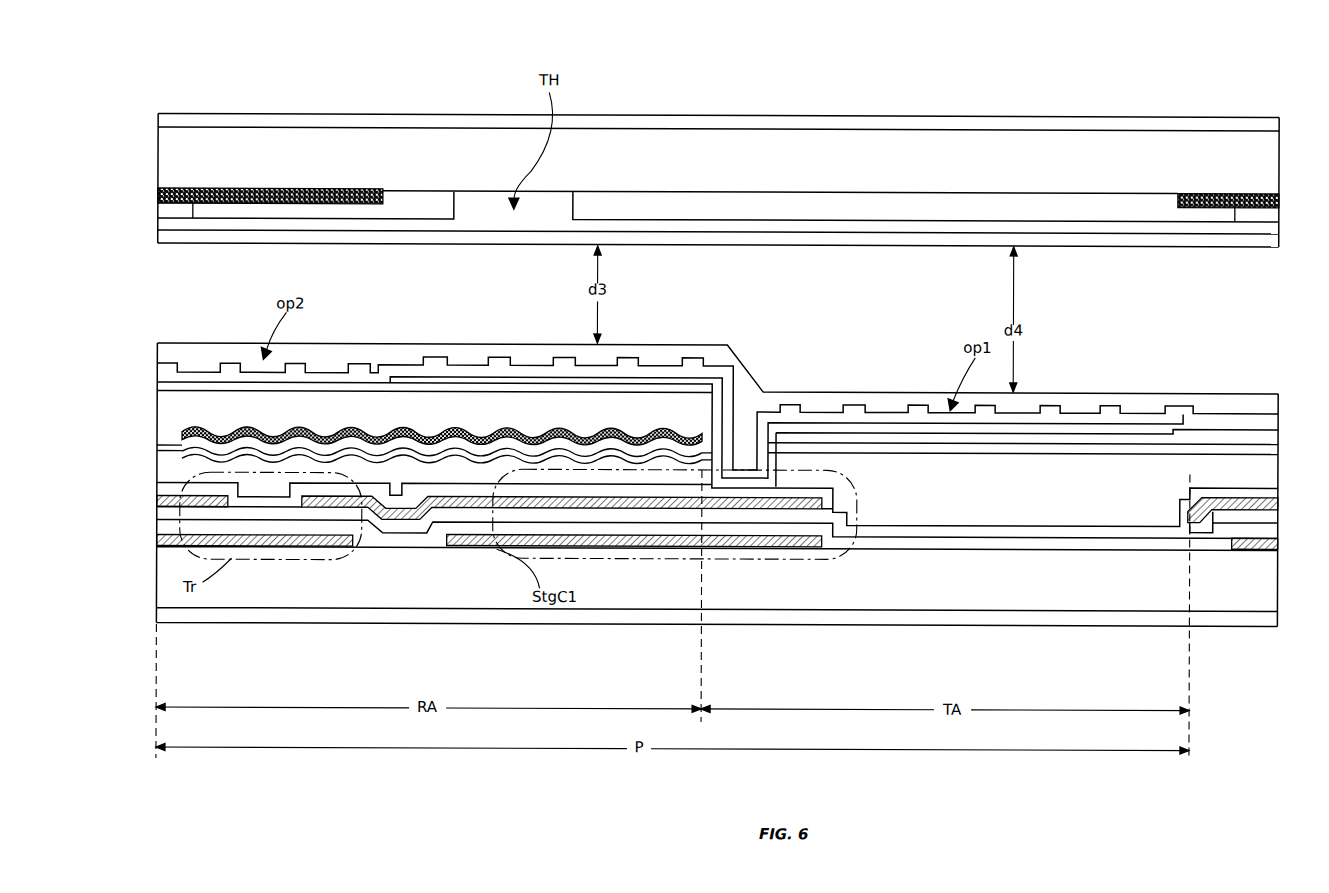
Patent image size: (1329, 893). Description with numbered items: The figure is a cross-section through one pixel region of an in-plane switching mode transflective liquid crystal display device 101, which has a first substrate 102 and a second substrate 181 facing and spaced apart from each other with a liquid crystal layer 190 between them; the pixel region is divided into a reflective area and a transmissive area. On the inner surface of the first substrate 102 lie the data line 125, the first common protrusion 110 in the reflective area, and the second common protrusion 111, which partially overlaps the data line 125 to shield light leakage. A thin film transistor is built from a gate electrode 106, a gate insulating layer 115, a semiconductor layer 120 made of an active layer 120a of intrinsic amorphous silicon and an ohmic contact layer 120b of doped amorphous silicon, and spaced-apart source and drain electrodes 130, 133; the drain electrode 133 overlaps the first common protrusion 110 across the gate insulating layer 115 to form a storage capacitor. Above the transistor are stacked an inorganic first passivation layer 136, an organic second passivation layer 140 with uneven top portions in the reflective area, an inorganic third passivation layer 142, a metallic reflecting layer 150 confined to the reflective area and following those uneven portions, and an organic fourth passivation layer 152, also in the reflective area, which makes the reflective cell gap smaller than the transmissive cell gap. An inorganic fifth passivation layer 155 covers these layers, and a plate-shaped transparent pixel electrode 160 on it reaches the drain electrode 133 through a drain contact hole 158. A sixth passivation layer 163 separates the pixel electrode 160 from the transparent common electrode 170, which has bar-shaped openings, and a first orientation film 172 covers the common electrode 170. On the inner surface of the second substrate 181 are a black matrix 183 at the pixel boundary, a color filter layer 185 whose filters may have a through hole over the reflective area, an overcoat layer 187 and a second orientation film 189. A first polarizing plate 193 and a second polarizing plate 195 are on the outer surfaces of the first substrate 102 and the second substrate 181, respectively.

The in-plane switching mode transflective liquid crystal display device 101 is at (1172, 87).
The first substrate 102 is at (1138, 594).
The gate electrode 106 is at (272, 546).
The first common protrusion 110 is at (637, 546).
The second common protrusion 111 is at (1258, 547).
The gate insulating layer 115 is at (937, 541).
The semiconductor layer 120 is at (716, 566).
The active layer 120a is at (382, 528).
The ohmic contact layer 120b is at (407, 523).
The data line 125 is at (1243, 496).
The source electrode 130 is at (200, 498).
The drain electrode 133 is at (328, 497).
The first passivation layer 136 is at (455, 486).
The second passivation layer 140 is at (612, 461).
The third passivation layer 142 is at (408, 427).
The reflecting layer 150 is at (467, 431).
The fourth passivation layer 152 is at (535, 406).
The fifth passivation layer 155 is at (243, 389).
The drain contact hole 158 is at (740, 467).
The pixel electrode 160 is at (656, 381).
The sixth passivation layer 163 is at (722, 372).
The common electrode 170 is at (497, 363).
The first orientation film 172 is at (1217, 404).
The second substrate 181 is at (1229, 171).
The black matrix 183 is at (272, 188).
The color filter layer 185 is at (438, 204).
The overcoat layer 187 is at (818, 242).
The second orientation film 189 is at (1178, 240).
The liquid crystal layer 190 is at (1228, 293).
The first polarizing plate 193 is at (850, 620).
The second polarizing plate 195 is at (750, 116).